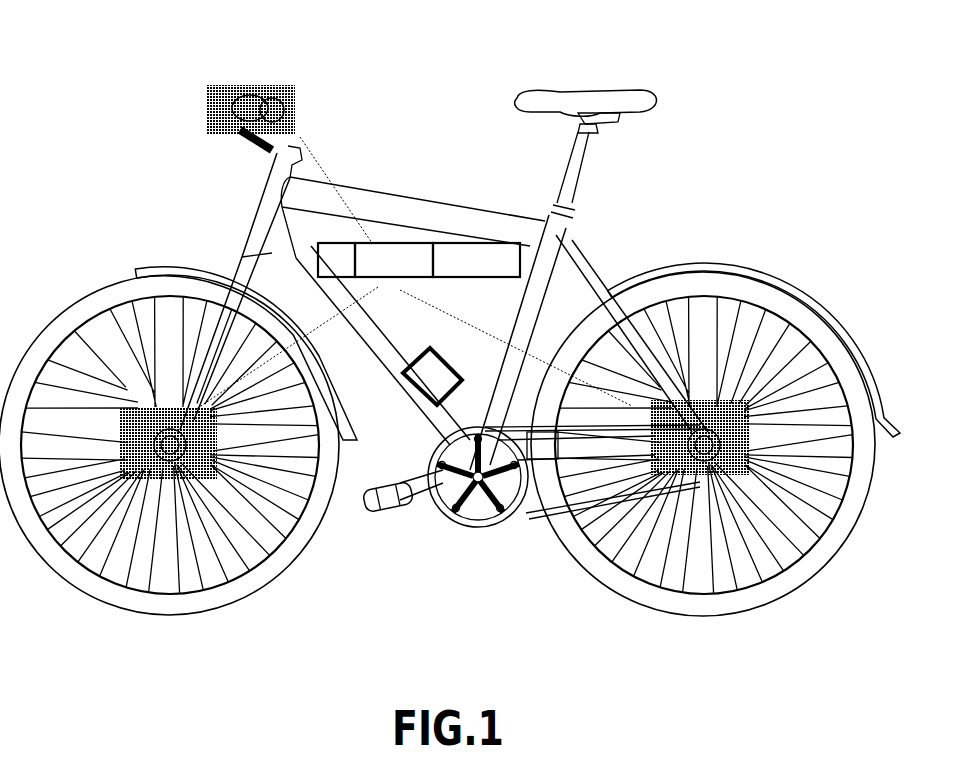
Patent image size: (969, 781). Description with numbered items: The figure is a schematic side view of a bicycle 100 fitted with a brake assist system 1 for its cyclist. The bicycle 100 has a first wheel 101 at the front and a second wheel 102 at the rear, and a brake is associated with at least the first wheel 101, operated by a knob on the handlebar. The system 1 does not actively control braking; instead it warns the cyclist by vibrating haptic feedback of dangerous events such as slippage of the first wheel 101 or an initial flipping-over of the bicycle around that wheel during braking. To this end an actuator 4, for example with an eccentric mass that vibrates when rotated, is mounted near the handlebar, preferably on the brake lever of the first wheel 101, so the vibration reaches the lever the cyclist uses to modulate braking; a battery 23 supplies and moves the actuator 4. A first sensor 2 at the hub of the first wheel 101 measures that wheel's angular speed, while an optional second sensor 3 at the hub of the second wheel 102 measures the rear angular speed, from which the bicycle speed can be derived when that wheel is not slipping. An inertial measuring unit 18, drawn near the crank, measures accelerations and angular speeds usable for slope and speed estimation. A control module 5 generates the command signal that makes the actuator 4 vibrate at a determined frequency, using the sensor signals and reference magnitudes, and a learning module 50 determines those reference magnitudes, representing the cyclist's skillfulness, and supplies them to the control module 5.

The bicycle 100 is at (683, 133).
The brake assist system 1 is at (383, 293).
The first sensor 2 is at (167, 457).
The second sensor 3 is at (717, 473).
The actuator 4 is at (222, 103).
The control module 5 is at (403, 260).
The inertial measuring unit 18 is at (435, 385).
The battery 23 is at (470, 258).
The learning module 50 is at (333, 257).
The first wheel 101 is at (248, 580).
The second wheel 102 is at (607, 568).